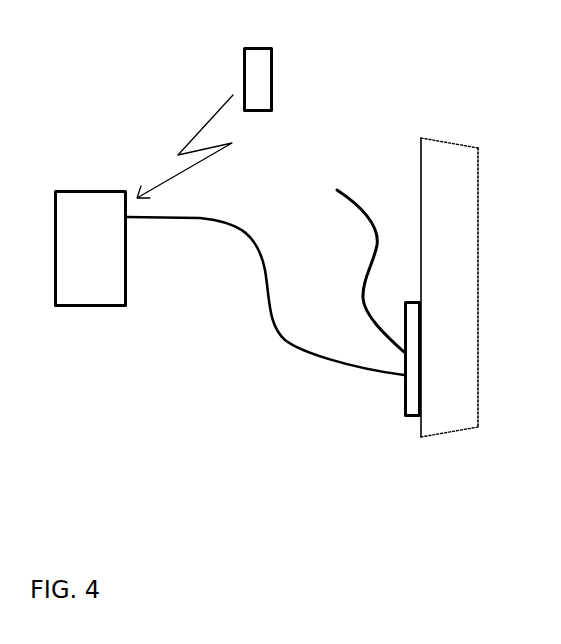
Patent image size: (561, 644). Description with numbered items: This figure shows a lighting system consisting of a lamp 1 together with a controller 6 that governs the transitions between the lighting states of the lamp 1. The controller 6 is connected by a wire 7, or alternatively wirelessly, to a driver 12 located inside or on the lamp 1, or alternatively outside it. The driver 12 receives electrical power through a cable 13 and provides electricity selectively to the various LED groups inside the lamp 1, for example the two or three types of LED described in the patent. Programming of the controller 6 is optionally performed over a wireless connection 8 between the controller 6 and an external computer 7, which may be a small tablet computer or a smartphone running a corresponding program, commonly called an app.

The lamp 1 is at (455, 415).
The controller 6 is at (107, 307).
The wire 7 is at (243, 75).
The wireless connection 8 is at (160, 118).
The driver 12 is at (403, 404).
The cable 13 is at (368, 221).